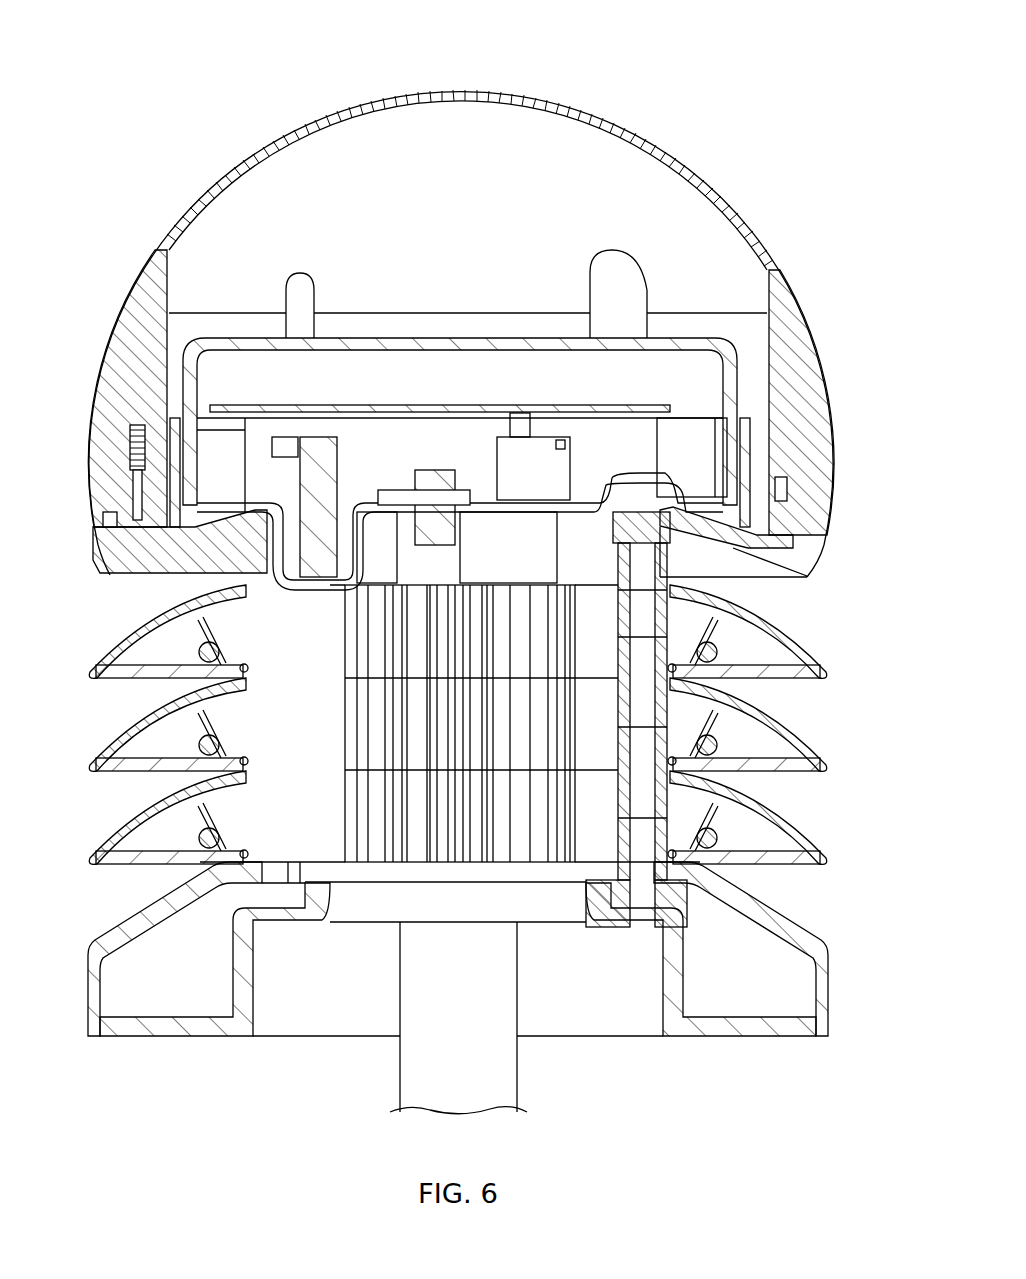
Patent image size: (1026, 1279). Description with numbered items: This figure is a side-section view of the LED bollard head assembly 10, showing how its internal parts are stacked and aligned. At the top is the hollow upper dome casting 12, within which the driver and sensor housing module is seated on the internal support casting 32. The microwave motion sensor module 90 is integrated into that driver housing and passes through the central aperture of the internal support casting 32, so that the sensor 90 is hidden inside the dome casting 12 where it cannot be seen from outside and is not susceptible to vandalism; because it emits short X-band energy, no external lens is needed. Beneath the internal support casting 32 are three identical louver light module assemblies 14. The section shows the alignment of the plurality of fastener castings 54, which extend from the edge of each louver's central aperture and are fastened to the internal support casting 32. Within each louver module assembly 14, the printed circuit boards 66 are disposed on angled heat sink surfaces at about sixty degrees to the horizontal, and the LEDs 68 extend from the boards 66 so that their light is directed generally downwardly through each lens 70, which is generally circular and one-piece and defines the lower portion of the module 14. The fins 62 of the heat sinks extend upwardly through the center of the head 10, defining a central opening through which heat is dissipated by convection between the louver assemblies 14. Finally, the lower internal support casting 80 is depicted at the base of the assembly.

The LED bollard head assembly 10 is at (178, 77).
The upper dome casting 12 is at (133, 277).
The louver light module assembly 14 is at (800, 634).
The internal support casting 32 is at (93, 560).
The fastener castings 54 is at (617, 602).
The fins 62 is at (338, 613).
The printed circuit board 66 is at (718, 633).
The LED 68 is at (718, 655).
The lens 70 is at (123, 670).
The lower internal support casting 80 is at (735, 1037).
The microwave motion sensor module 90 is at (316, 537).